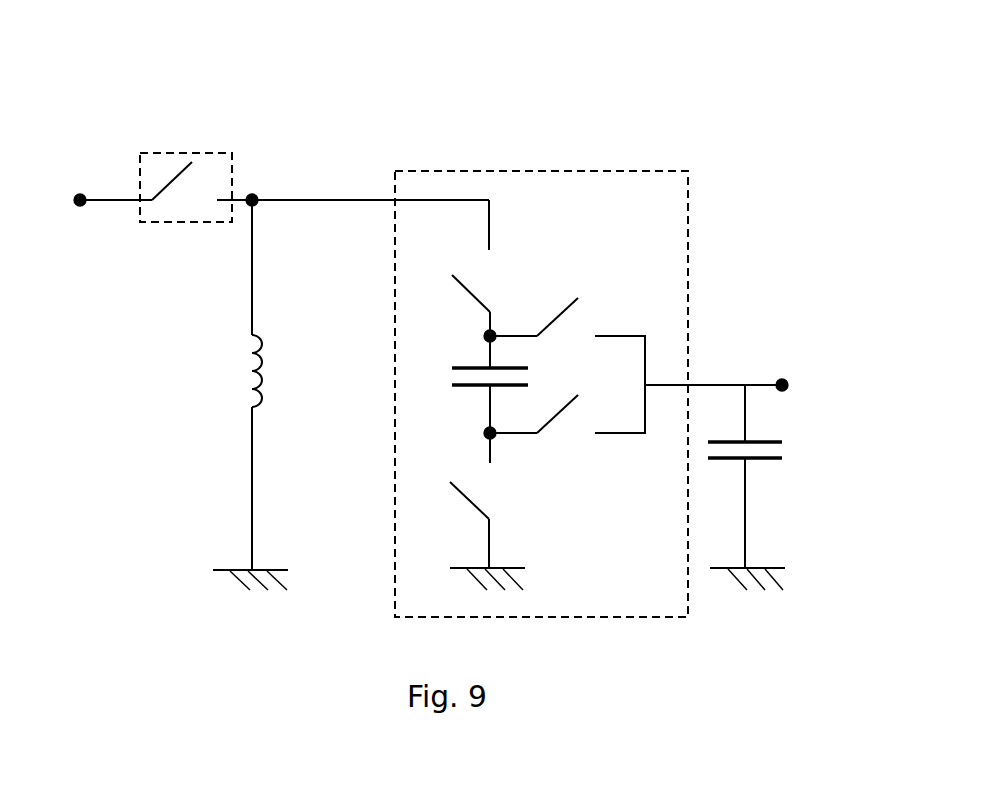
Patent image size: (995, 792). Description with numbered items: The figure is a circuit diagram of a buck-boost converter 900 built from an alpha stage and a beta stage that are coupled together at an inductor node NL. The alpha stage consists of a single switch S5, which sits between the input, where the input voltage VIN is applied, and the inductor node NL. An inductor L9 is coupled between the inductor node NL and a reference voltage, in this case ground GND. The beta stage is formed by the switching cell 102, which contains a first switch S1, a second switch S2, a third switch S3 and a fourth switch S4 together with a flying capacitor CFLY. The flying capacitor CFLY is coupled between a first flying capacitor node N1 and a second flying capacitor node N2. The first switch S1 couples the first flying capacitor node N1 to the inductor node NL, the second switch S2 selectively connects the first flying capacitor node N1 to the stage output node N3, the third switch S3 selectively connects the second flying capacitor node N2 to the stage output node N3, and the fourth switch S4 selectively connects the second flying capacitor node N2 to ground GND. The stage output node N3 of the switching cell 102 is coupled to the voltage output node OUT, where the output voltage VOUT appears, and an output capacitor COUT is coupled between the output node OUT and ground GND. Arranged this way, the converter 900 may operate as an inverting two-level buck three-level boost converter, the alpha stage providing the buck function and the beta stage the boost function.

The buck-boost converter 900 is at (749, 137).
The switching cell 102 is at (673, 207).
The input voltage VIN is at (77, 186).
The single switch S5 is at (196, 163).
The inductor node NL is at (363, 251).
The inductor L9 is at (282, 452).
The first switch S1 is at (495, 305).
The second switch S2 is at (536, 332).
The third switch S3 is at (536, 430).
The fourth switch S4 is at (493, 525).
The first flying capacitor node N1 is at (467, 337).
The second flying capacitor node N2 is at (469, 437).
The stage output node N3 is at (688, 384).
The flying capacitor CFLY is at (474, 399).
The output voltage VOUT is at (806, 370).
The voltage output node OUT is at (791, 413).
The output capacitor COUT is at (768, 505).
The ground GND is at (525, 581).